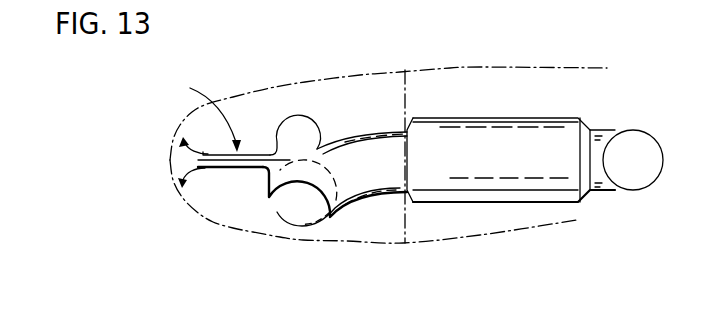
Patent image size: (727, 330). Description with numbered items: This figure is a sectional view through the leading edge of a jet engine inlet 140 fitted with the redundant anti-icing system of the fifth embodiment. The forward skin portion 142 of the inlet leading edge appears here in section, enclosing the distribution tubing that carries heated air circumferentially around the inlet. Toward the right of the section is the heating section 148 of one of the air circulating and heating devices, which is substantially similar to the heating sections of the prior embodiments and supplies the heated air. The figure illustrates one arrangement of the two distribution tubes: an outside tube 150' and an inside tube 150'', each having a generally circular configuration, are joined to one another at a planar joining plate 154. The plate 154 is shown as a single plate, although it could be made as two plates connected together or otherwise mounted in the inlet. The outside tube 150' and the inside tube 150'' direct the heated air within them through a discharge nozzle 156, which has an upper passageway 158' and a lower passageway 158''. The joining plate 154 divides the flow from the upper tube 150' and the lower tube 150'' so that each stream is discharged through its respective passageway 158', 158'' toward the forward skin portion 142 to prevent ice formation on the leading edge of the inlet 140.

The jet engine inlet 140 is at (500, 66).
The forward skin portion 142 is at (168, 163).
The heating section 148 is at (508, 203).
The outside tube 150' is at (306, 101).
The inside tube 150'' is at (307, 226).
The planar joining plate 154 is at (232, 172).
The discharge nozzle 156 is at (199, 112).
The upper passageway 158' is at (160, 124).
The lower passageway 158'' is at (165, 206).